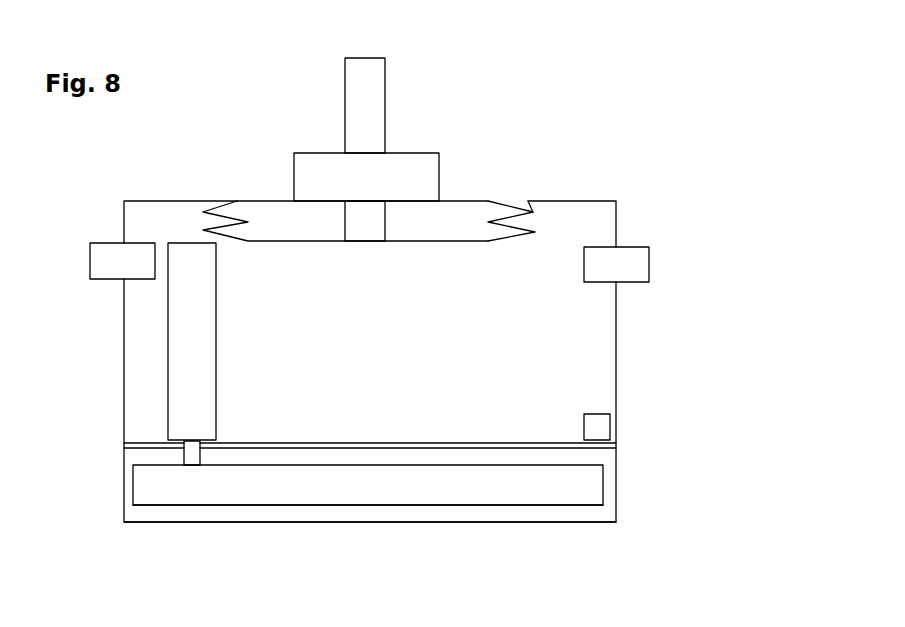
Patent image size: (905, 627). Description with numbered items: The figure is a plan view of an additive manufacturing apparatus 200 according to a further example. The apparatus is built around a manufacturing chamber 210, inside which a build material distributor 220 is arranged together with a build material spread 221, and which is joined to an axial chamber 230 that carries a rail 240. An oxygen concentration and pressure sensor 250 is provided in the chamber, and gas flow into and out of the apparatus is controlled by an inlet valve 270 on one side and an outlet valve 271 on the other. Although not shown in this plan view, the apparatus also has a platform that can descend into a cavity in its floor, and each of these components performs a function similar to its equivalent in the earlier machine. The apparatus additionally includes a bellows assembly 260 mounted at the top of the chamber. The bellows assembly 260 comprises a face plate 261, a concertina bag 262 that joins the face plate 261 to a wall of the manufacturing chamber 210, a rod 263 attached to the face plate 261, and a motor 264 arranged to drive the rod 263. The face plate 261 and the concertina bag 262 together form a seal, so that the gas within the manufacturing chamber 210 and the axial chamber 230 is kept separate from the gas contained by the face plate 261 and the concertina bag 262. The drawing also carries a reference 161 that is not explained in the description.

The additive manufacturing apparatus 200 is at (638, 110).
The manufacturing chamber 210 is at (160, 201).
The build material distributor 220 is at (205, 378).
The build material spread 221 is at (200, 455).
The axial chamber 230 is at (535, 517).
The rail 240 is at (420, 490).
The oxygen concentration and pressure sensor 250 is at (605, 422).
The bellows assembly 260 is at (461, 159).
The face plate 261 is at (433, 241).
The concertina bag 262 is at (527, 212).
The rod 263 is at (362, 228).
The motor 264 is at (323, 168).
The inlet valve 270 is at (102, 280).
The outlet valve 271 is at (637, 285).
The base plate 161 is at (163, 508).